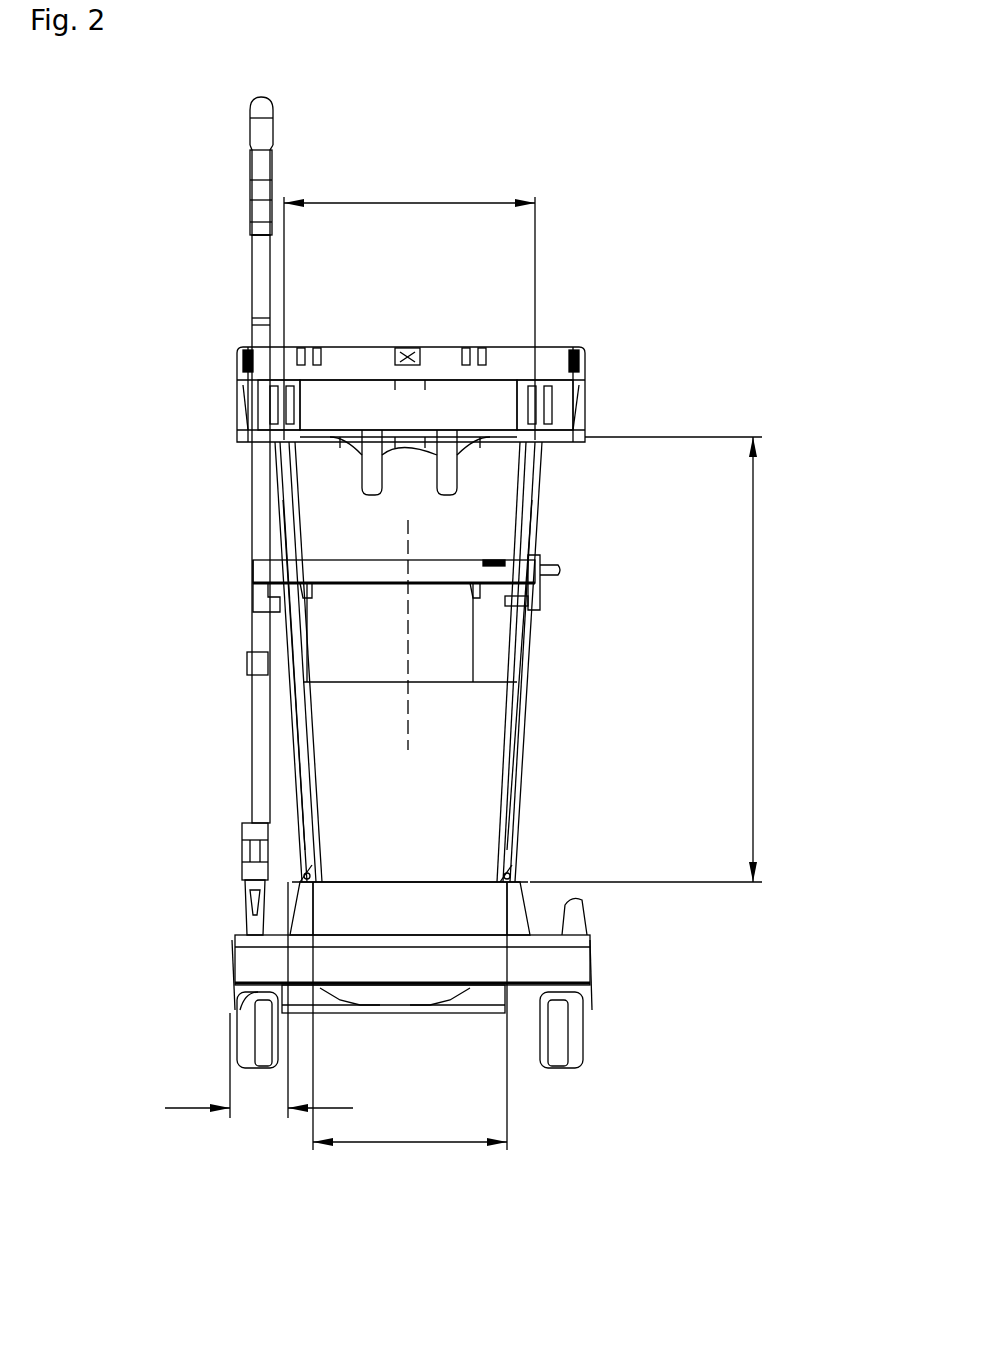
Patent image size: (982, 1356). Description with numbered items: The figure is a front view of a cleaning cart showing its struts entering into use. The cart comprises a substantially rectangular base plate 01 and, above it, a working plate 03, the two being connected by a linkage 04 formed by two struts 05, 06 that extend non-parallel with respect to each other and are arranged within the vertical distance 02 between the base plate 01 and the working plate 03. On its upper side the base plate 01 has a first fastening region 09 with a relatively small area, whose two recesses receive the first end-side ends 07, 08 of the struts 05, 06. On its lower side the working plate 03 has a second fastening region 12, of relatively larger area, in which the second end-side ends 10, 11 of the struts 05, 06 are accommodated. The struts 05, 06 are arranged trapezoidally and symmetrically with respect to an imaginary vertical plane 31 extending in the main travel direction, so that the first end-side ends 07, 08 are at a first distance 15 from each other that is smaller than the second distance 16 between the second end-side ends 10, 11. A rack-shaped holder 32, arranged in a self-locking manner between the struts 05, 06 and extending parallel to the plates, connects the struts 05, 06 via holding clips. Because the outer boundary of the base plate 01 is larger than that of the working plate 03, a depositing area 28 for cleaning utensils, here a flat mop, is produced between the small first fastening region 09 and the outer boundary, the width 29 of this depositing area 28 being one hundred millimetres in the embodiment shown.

The base plate 01 is at (252, 968).
The vertical distance 02 is at (755, 680).
The working plate 03 is at (355, 368).
The linkage 04 is at (310, 790).
The strut 05 is at (533, 540).
The strut 06 is at (285, 540).
The first end-side end 07 is at (302, 872).
The first end-side end 08 is at (507, 873).
The first fastening region 09 is at (483, 920).
The second end-side end 10 is at (282, 437).
The second end-side end 11 is at (558, 422).
The second fastening region 12 is at (490, 415).
The first distance 15 is at (408, 1145).
The second distance 16 is at (400, 200).
The depositing area 28 is at (248, 928).
The width 29 is at (258, 1112).
The imaginary vertical plane 31 is at (408, 642).
The holder 32 is at (283, 573).